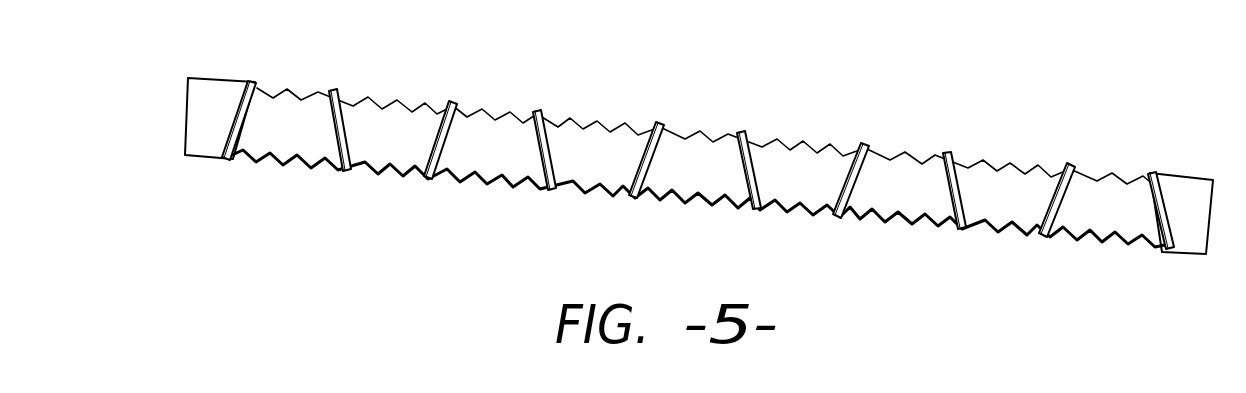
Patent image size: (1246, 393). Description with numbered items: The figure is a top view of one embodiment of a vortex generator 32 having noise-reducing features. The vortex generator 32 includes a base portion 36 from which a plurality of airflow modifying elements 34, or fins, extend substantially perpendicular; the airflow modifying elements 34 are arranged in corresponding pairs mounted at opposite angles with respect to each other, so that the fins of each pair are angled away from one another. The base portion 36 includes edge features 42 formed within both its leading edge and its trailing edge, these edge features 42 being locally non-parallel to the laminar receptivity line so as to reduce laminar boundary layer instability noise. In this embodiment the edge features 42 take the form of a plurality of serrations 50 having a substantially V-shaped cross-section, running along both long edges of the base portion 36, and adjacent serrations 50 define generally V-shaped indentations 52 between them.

The vortex generator 32 is at (699, 139).
The airflow modifying element 34 is at (698, 155).
The base portion 36 is at (713, 178).
The edge features 42 is at (697, 174).
The serrations 50 is at (708, 200).
The indentations 52 is at (622, 193).